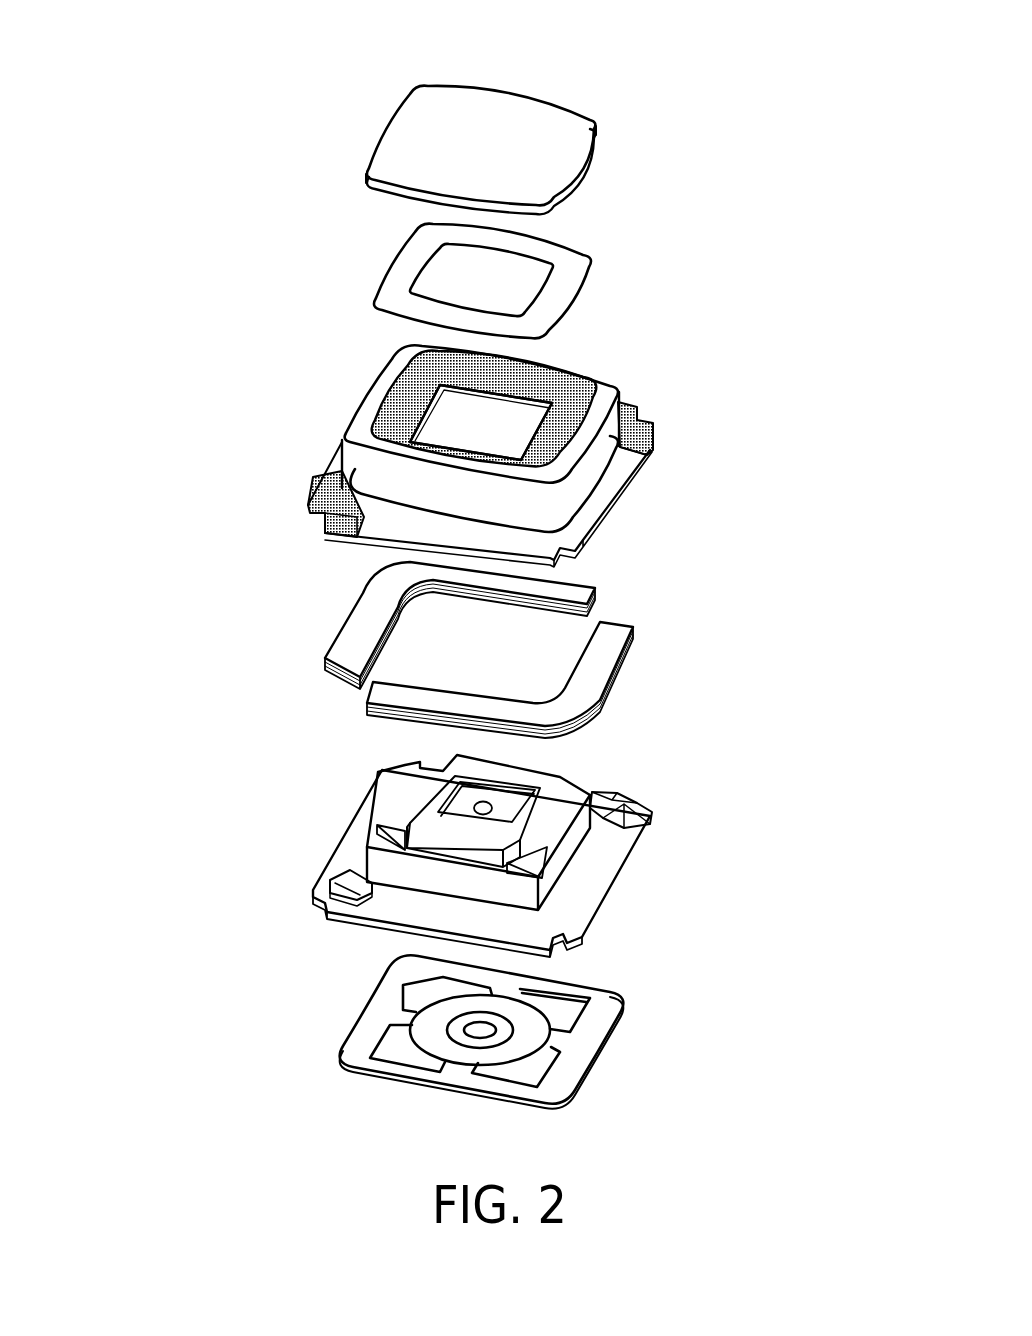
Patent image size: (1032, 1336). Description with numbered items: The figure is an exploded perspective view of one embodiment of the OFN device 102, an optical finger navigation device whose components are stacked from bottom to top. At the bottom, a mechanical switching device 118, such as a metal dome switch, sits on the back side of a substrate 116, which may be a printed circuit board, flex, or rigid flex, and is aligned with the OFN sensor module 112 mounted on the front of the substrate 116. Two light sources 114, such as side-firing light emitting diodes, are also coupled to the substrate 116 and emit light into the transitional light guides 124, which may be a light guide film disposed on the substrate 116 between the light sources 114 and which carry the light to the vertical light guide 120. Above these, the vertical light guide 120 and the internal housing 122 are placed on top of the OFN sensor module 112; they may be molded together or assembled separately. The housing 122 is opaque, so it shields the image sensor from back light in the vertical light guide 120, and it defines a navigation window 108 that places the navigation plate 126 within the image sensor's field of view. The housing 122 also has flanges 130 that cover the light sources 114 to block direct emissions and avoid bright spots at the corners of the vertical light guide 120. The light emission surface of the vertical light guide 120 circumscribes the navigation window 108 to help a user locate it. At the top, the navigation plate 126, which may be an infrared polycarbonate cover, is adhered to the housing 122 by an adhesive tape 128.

The OFN device 102 is at (232, 38).
The navigation window 108 is at (446, 412).
The OFN sensor module 112 is at (580, 788).
The light sources 114 is at (330, 880).
The substrate 116 is at (582, 888).
The mechanical switching device 118 is at (333, 1063).
The vertical light guide 120 is at (592, 473).
The internal housing 122 is at (600, 378).
The transitional light guides 124 is at (367, 700).
The navigation plate 126 is at (598, 124).
The adhesive tape 128 is at (377, 317).
The flanges 130 is at (308, 508).